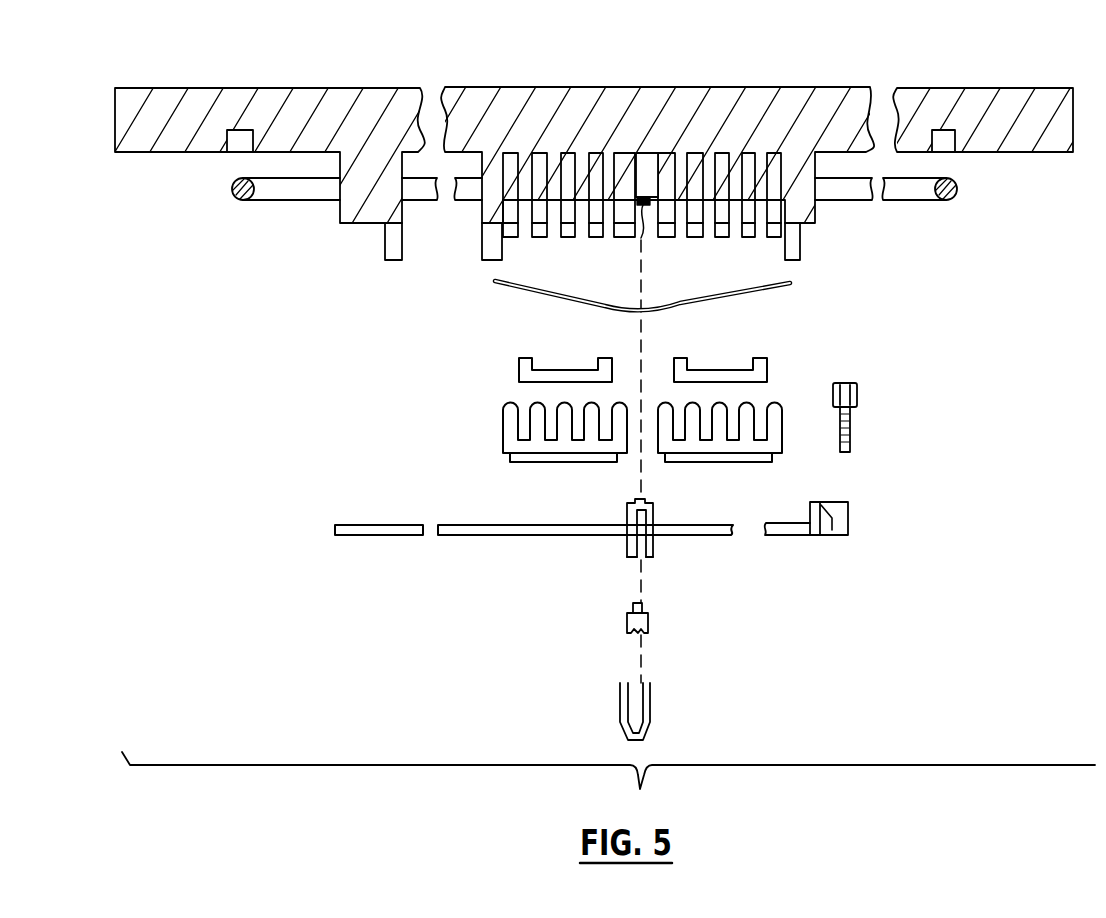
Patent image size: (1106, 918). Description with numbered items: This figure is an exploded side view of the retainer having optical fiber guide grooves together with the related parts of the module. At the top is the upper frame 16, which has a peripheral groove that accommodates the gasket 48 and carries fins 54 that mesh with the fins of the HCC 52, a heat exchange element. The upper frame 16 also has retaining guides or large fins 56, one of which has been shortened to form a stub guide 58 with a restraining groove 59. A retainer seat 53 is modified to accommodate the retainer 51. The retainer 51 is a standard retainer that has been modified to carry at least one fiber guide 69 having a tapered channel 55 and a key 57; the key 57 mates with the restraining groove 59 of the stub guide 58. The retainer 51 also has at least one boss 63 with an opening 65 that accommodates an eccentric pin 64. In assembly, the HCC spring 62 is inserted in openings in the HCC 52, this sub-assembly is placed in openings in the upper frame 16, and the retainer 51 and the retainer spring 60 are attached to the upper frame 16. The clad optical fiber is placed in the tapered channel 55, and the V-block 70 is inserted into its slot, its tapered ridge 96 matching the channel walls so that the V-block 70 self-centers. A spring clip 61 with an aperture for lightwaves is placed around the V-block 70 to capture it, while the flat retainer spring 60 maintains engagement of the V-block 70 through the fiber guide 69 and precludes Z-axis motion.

The upper frame 16 is at (275, 93).
The gasket 48 is at (232, 189).
The retainer 51 is at (457, 523).
The HCC 52 is at (500, 442).
The retainer seat 53 is at (486, 246).
The fins 54 is at (557, 158).
The tapered channel 55 is at (640, 560).
The large fins 56 is at (488, 204).
The key 57 is at (648, 499).
The stub guide 58 is at (650, 163).
The restraining groove 59 is at (650, 243).
The retainer spring 60 is at (543, 293).
The spring clip 61 is at (651, 720).
The HCC spring 62 is at (518, 372).
The boss 63 is at (849, 509).
The eccentric pin 64 is at (858, 402).
The opening 65 is at (822, 520).
The fiber guide 69 is at (626, 545).
The V-block 70 is at (649, 620).
The tapered ridge 96 is at (630, 607).